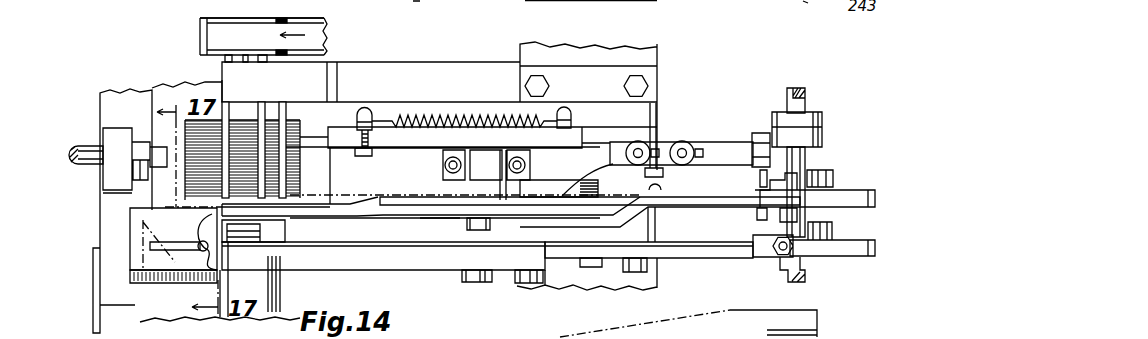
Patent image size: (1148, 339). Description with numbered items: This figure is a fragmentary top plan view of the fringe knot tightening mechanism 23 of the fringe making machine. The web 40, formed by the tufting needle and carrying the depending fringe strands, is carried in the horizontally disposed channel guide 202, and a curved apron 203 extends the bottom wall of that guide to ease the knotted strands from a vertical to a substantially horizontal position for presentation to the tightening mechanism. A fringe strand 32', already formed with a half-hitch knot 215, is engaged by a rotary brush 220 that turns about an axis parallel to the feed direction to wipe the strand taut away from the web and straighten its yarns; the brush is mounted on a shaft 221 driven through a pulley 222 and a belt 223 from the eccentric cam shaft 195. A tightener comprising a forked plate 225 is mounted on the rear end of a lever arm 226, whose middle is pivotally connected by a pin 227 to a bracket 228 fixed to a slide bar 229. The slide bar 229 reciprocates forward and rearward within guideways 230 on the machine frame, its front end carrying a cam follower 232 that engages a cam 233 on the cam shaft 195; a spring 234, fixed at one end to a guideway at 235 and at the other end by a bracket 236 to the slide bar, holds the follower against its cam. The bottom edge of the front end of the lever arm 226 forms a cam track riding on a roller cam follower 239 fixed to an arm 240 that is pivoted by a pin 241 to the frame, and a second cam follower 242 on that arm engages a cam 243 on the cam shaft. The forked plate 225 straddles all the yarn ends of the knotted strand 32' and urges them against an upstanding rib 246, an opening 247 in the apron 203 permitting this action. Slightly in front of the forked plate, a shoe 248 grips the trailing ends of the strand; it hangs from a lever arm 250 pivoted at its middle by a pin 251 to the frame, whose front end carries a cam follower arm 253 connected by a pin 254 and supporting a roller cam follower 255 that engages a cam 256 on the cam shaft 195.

The fringe knot tightening mechanism 23 is at (422, 287).
The fringe strand 32' is at (383, 269).
The web 40 is at (143, 233).
The cam shaft 195 is at (806, 103).
The channel guide 202 is at (140, 116).
The apron 203 is at (187, 96).
The half-hitch knot 215 is at (161, 230).
The rotary brush 220 is at (300, 128).
The shaft 221 is at (243, 64).
The pulley 222 is at (277, 16).
The belt 223 is at (262, 46).
The forked plate 225 is at (175, 284).
The lever arm 226 is at (675, 197).
The pin 227 is at (467, 228).
The bracket 228 is at (498, 169).
The slide bar 229 is at (440, 175).
The guideways 230 is at (568, 189).
The cam follower 232 is at (761, 132).
The cam 233 is at (820, 137).
The spring 234 is at (438, 118).
The spring anchor point 235 is at (562, 112).
The bracket 236 is at (371, 150).
The cam follower 239 is at (755, 189).
The arm 240 is at (628, 216).
The pin 241 is at (527, 283).
The cam follower 242 is at (792, 187).
The cam 243 is at (884, 183).
The rib 246 is at (196, 251).
The opening 247 is at (152, 272).
The shoe 248 is at (284, 229).
The lever arm 250 is at (402, 242).
The pin 251 is at (478, 283).
The cam follower arm 253 is at (703, 267).
The pin 254 is at (637, 273).
The cam follower 255 is at (806, 258).
The cam 256 is at (885, 229).